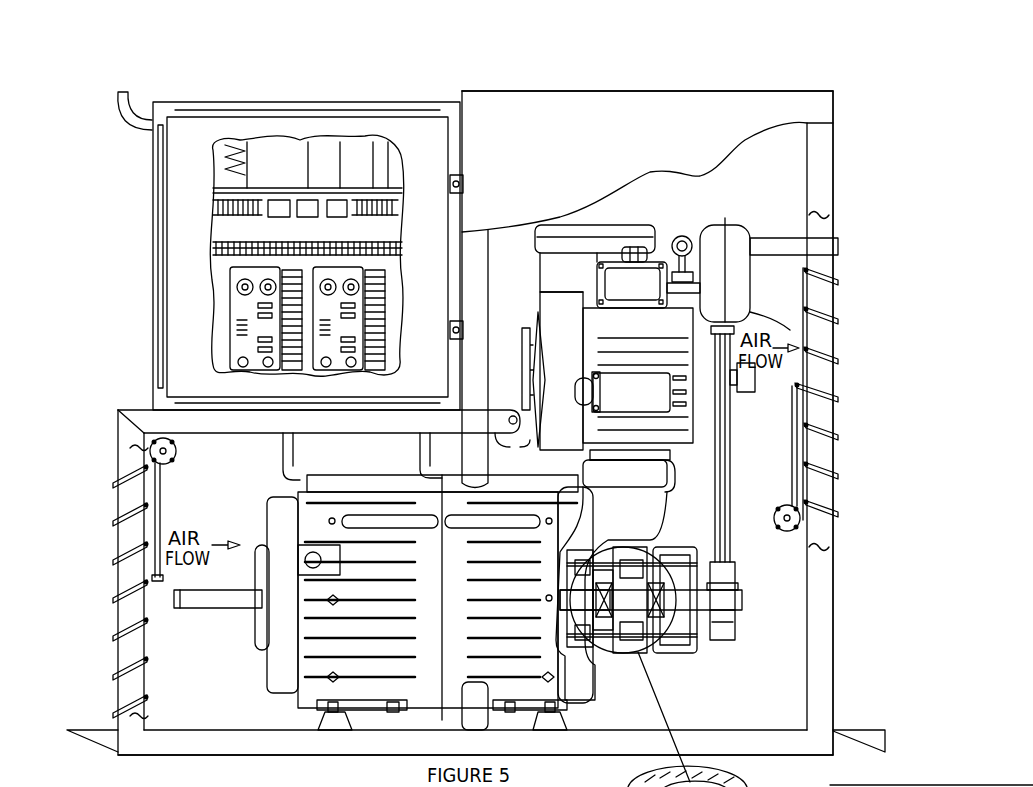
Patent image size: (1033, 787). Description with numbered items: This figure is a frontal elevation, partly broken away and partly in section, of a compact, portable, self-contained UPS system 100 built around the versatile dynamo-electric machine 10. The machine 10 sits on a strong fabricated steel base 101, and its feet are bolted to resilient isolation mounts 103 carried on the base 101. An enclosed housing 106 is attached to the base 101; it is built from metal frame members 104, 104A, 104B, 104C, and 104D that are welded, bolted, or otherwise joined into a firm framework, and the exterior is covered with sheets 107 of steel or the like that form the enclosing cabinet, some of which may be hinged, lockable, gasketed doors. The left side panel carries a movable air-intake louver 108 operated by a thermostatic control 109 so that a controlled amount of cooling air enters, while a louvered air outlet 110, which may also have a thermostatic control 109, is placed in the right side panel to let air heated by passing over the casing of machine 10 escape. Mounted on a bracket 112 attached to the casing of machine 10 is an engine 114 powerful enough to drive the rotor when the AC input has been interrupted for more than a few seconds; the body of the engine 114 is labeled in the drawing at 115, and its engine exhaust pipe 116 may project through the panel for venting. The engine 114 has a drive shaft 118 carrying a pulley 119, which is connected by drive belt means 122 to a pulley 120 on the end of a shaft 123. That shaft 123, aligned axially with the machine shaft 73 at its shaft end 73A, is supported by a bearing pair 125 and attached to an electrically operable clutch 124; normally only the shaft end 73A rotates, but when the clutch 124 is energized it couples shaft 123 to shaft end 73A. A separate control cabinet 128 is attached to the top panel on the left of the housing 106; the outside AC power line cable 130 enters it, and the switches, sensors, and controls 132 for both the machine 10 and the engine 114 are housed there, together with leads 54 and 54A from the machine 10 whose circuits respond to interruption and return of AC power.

The dynamo-electric machine 10 is at (430, 560).
The lead 54 is at (287, 465).
The lead 54A is at (427, 467).
The shaft 73 is at (192, 598).
The shaft end 73A is at (593, 598).
The UPS system 100 is at (151, 784).
The base 101 is at (803, 743).
The resilient isolation mounts 103 is at (325, 720).
The metal frame member 104 is at (818, 190).
The metal frame member 104A is at (128, 722).
The metal frame member 104B is at (147, 416).
The metal frame member 104C is at (476, 332).
The metal frame member 104D is at (495, 443).
The enclosed housing 106 is at (713, 90).
The sheets 107 is at (643, 120).
The movable air-intake louver 108 is at (132, 580).
The thermostatic control 109 is at (150, 449).
The louvered air outlet 110 is at (818, 412).
The bracket 112 is at (653, 493).
The engine 114 is at (593, 262).
The compressor body 115 is at (640, 392).
The engine exhaust pipe 116 is at (820, 248).
The drive shaft 118 is at (743, 382).
The pulley 119 is at (740, 333).
The pulley 120 is at (727, 625).
The drive belt means 122 is at (727, 472).
The shaft 123 is at (732, 600).
The electrically operable clutch 124 is at (643, 623).
The bearing pair 125 is at (660, 622).
The control cabinet 128 is at (198, 255).
The AC power line cable 130 is at (122, 128).
The controls 132 is at (247, 308).